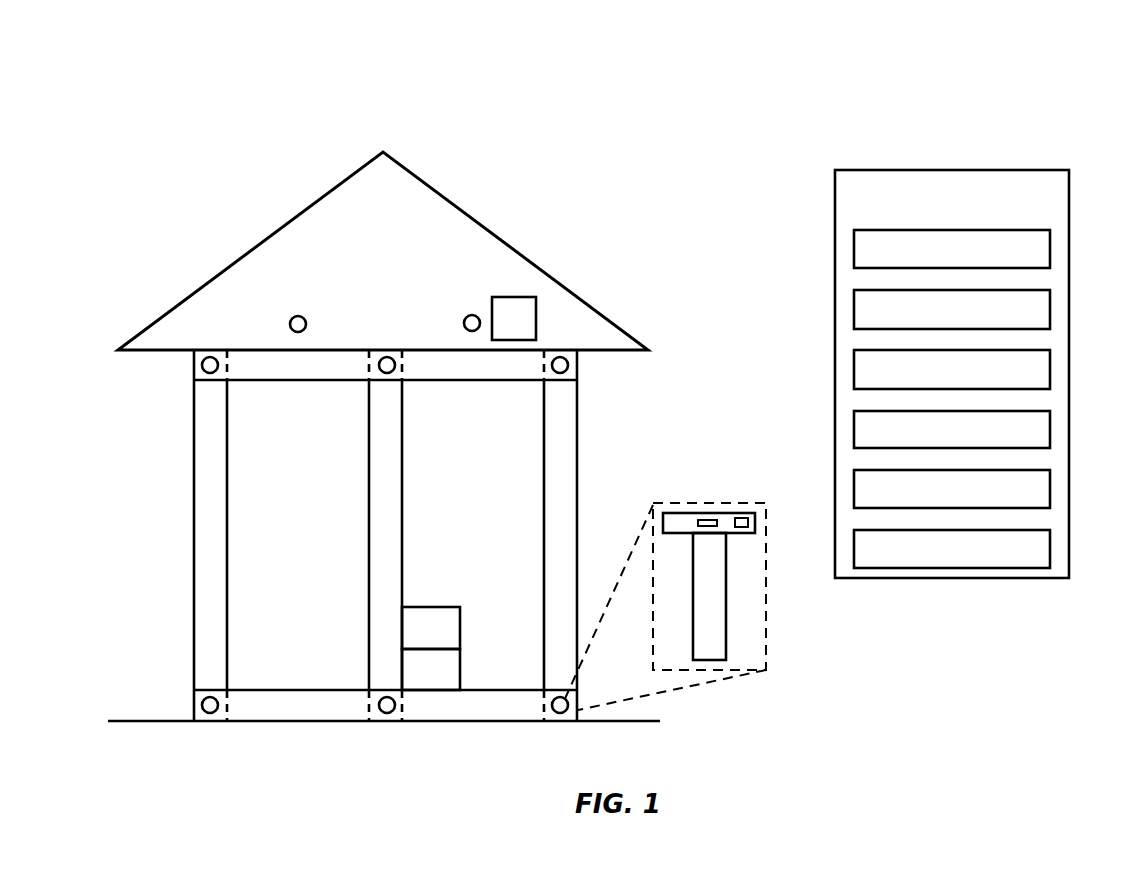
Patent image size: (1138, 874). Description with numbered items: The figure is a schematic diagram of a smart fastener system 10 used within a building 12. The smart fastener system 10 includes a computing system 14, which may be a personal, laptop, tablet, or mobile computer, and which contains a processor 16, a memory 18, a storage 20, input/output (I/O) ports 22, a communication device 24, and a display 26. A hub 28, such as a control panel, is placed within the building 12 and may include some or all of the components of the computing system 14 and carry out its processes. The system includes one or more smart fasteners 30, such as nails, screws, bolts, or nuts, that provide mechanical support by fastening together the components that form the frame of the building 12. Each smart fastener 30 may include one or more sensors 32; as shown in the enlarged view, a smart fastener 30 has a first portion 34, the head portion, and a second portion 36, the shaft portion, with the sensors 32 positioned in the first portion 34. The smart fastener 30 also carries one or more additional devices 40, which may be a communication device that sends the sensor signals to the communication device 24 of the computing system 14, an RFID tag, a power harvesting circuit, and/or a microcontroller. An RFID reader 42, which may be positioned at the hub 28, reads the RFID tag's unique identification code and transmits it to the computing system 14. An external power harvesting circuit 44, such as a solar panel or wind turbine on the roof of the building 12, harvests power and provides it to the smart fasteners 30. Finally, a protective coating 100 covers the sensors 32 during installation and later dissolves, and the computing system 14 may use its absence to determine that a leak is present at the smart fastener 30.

The smart fastener system 10 is at (226, 76).
The building 12 is at (457, 206).
The computing system 14 is at (952, 170).
The processor 16 is at (1050, 247).
The memory 18 is at (1050, 307).
The storage 20 is at (1050, 367).
The input/output (I/O) ports 22 is at (1050, 427).
The communication device 24 is at (1050, 487).
The display 26 is at (1050, 547).
The hub 28 is at (460, 669).
The smart fastener 30 is at (295, 316).
The sensor 32 is at (707, 518).
The first portion 34 is at (672, 512).
The second portion 36 is at (729, 574).
The additional device 40 is at (750, 522).
The RFID reader 42 is at (460, 628).
The external power harvesting circuit 44 is at (512, 297).
The protective coating 100 is at (743, 534).